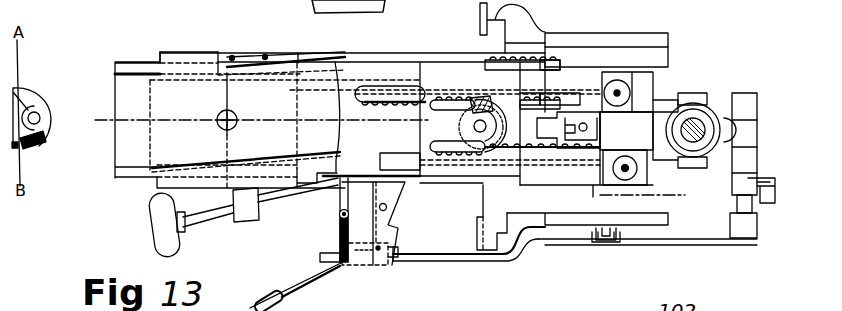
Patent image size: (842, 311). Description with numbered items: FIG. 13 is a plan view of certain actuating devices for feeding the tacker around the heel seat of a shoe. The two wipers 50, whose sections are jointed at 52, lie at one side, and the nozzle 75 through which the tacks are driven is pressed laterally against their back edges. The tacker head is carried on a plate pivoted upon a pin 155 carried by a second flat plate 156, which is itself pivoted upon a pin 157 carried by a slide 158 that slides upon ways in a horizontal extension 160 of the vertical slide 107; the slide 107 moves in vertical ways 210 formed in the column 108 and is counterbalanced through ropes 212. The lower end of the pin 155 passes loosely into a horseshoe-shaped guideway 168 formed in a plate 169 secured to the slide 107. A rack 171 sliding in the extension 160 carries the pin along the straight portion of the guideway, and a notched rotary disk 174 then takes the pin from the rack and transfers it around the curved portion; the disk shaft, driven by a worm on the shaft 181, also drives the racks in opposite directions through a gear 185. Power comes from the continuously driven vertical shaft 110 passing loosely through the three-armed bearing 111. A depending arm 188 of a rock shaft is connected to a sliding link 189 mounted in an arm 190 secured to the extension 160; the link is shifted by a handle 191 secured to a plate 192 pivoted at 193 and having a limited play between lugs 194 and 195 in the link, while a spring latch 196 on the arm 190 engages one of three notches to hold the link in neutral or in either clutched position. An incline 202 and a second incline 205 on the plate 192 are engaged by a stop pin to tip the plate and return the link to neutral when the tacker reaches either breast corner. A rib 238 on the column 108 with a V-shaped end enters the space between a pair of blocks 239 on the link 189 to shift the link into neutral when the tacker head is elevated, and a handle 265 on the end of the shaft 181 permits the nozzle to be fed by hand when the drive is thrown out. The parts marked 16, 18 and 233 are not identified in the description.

The housing 16 is at (218, 52).
The center line 18 is at (394, 157).
The wipers 50 is at (25, 103).
The wiper section joint 52 is at (40, 115).
The nozzle 75 is at (39, 144).
The vertical slide 107 is at (500, 196).
The column 108 is at (623, 40).
The vertical shaft 110 is at (699, 124).
The three-armed bearing 111 is at (667, 105).
The pivot pin 155 is at (478, 97).
The flat plate 156 is at (182, 93).
The pin 157 is at (221, 111).
The slide 158 is at (167, 186).
The horizontal extension 160 is at (118, 178).
The guideway 168 is at (445, 100).
The plate 169 is at (433, 73).
The rack 171 is at (373, 93).
The rotary disk 174 is at (492, 112).
The shaft 181 is at (260, 222).
The gear 185 is at (536, 92).
The depending arm 188 is at (745, 234).
The sliding link 189 is at (722, 246).
The arm 190 is at (339, 207).
The handle 191 is at (253, 304).
The plate 192 is at (380, 228).
The pivot 193 is at (388, 207).
The lug 194 is at (368, 265).
The lug 195 is at (392, 258).
The spring latch 196 is at (333, 266).
The incline 202 is at (425, 195).
The second incline 205 is at (400, 229).
The vertical ways 210 is at (497, 250).
The ropes 212 is at (647, 173).
The rack 233 is at (284, 57).
The rib 238 is at (605, 228).
The blocks 239 is at (612, 243).
The handle 265 is at (160, 232).